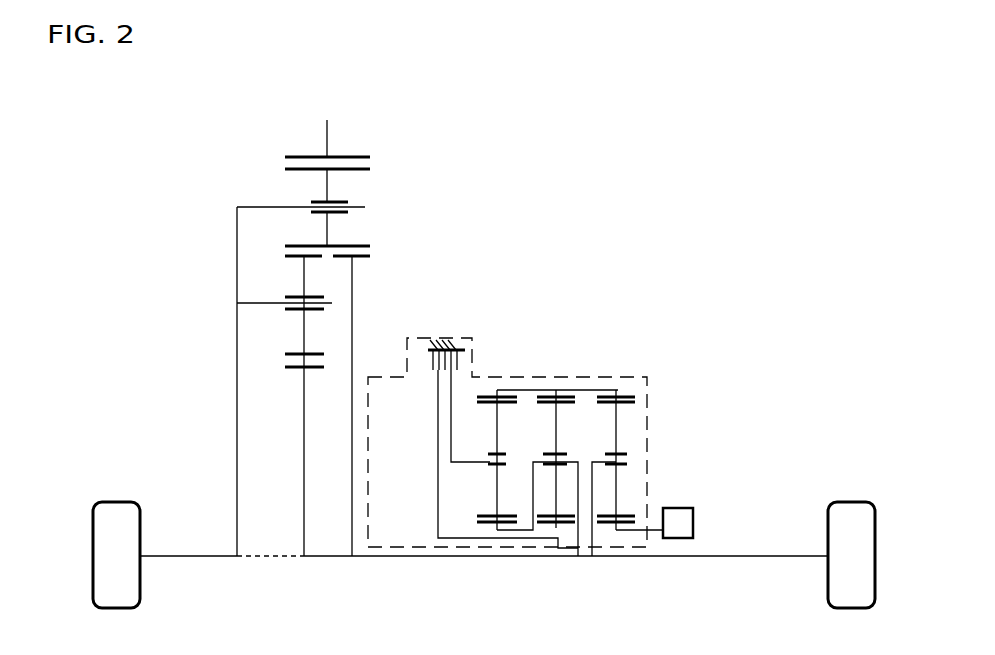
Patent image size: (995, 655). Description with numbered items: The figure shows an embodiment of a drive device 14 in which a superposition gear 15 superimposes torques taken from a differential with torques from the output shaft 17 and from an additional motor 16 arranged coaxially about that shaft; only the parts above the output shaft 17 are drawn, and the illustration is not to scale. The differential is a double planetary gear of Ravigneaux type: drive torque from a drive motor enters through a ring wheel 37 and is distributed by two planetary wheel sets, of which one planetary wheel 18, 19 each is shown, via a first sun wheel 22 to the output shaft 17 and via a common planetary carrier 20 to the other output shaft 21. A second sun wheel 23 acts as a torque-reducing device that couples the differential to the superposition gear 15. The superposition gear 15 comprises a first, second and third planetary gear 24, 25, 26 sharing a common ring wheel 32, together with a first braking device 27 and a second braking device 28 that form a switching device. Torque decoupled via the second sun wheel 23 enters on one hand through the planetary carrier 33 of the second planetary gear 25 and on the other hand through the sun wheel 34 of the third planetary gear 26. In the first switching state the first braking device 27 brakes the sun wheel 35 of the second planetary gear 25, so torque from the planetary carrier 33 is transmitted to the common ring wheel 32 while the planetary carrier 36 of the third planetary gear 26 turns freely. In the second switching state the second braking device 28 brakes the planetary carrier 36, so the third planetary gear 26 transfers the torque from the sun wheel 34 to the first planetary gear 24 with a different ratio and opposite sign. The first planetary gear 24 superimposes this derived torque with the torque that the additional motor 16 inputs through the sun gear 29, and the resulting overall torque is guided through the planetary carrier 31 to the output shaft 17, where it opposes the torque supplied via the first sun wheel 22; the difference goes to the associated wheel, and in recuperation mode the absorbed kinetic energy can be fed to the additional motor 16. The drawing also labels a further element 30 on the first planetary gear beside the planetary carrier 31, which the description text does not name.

The drive device 14 is at (523, 225).
The superposition gear 15 is at (659, 391).
The additional motor 16 is at (695, 520).
The output shaft 17 is at (347, 556).
The planetary wheel 18 is at (327, 228).
The planetary wheel 19 is at (300, 313).
The common planetary carrier 20 is at (237, 432).
The other output shaft 21 is at (218, 556).
The first sun wheel 22 is at (303, 475).
The second sun wheel 23 is at (352, 320).
The first planetary gear 24 is at (618, 380).
The second planetary gear 25 is at (564, 380).
The third planetary gear 26 is at (523, 381).
The first braking device 27 is at (432, 362).
The second braking device 28 is at (457, 360).
The sun gear 29 is at (612, 527).
The gear 30 is at (617, 420).
The planetary carrier 31 is at (627, 455).
The common ring wheel 32 is at (585, 390).
The planetary carrier 33 is at (537, 458).
The sun wheel 34 is at (497, 527).
The sun wheel 35 is at (555, 528).
The planetary carrier 36 is at (476, 460).
The ring wheel 37 is at (327, 138).